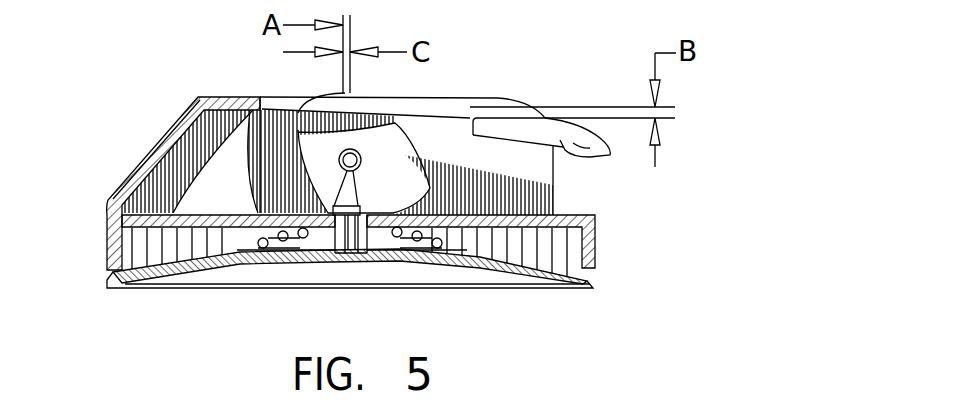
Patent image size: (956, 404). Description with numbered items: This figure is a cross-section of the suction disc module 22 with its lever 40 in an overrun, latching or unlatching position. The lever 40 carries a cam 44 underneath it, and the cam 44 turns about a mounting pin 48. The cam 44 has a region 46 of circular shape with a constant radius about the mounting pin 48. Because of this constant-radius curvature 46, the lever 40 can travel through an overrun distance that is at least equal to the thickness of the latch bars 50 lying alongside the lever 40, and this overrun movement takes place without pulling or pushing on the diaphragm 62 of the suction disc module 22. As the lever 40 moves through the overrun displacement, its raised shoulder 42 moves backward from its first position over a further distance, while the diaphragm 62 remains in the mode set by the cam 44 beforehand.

The suction disc module 22 is at (163, 132).
The lever 40 is at (603, 133).
The raised shoulder 42 is at (405, 90).
The cam 44 is at (426, 186).
The region of circular shape 46 is at (338, 238).
The mounting pin 48 is at (335, 157).
The latch bars 50 is at (510, 123).
The diaphragm 62 is at (178, 290).